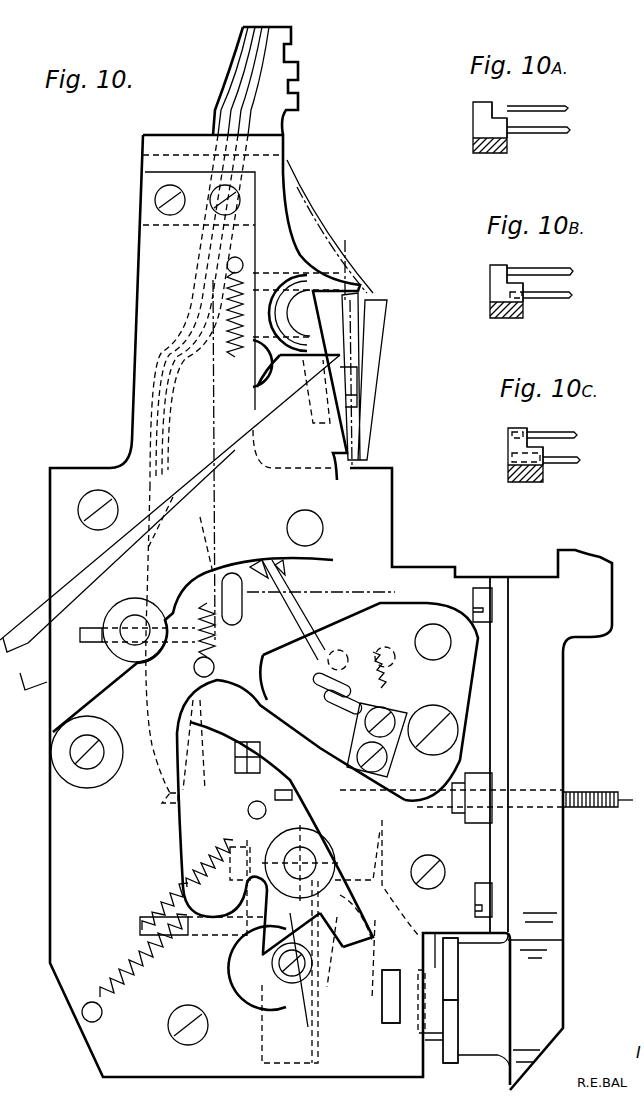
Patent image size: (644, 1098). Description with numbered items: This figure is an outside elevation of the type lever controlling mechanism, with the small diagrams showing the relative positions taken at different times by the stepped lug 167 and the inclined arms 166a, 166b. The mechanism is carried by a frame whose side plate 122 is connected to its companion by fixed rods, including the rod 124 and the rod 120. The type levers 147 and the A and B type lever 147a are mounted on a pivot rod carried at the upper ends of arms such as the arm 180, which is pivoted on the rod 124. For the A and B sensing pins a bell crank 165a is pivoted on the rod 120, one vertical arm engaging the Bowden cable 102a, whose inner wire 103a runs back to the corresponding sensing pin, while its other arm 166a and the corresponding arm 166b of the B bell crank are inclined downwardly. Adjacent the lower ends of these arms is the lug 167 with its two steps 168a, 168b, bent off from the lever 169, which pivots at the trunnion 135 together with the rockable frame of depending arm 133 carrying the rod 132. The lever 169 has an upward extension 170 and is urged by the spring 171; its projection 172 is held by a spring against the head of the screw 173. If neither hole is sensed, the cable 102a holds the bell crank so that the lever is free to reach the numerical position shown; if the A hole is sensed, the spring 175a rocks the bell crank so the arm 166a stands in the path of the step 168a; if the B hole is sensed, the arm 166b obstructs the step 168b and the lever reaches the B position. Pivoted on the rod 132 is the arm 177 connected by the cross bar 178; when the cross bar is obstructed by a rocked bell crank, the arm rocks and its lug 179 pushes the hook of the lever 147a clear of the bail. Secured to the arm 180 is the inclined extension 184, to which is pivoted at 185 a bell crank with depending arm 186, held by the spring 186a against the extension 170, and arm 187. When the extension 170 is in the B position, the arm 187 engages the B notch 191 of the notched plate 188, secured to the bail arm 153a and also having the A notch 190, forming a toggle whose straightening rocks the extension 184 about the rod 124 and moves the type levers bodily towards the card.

In FIG. 10, the Bowden cable 102a is at (588, 792).
In FIG. 10, the pin extension 103a is at (625, 807).
In FIG. 10, the rod 120 is at (433, 873).
In FIG. 10, the side plate 122 is at (75, 842).
In FIG. 10, the rod 124 is at (308, 526).
In FIG. 10, the rod 132 is at (265, 980).
In FIG. 10, the depending arm 133 is at (295, 985).
In FIG. 10, the trunnion 135 is at (187, 887).
In FIG. 10, the type lever 147 is at (270, 55).
In FIG. 10, the A and B type lever 147a is at (263, 112).
In FIG. 10, the arm of the actuating bail 153a is at (357, 657).
In FIG. 10, the bell crank 165a is at (440, 840).
In FIG. 10, the inclined arm 166a is at (365, 948).
In FIG. 10A, the inclined arm 166a is at (553, 132).
In FIG. 10B, the inclined arm 166a is at (565, 298).
In FIG. 10C, the inclined arm 166a is at (578, 462).
In FIG. 10A, the inclined arm 166b is at (550, 108).
In FIG. 10B, the inclined arm 166b is at (567, 270).
In FIG. 10C, the inclined arm 166b is at (575, 436).
In FIG. 10, the stepped lug 167 is at (312, 985).
In FIG. 10A, the stepped lug 167 is at (473, 118).
In FIG. 10B, the stepped lug 167 is at (490, 280).
In FIG. 10C, the stepped lug 167 is at (508, 445).
In FIG. 10, the step 168a is at (345, 925).
In FIG. 10A, the step 168a is at (507, 135).
In FIG. 10B, the step 168a is at (523, 300).
In FIG. 10C, the step 168a is at (543, 465).
In FIG. 10, the step 168b is at (370, 997).
In FIG. 10A, the step 168b is at (495, 103).
In FIG. 10B, the step 168b is at (510, 266).
In FIG. 10C, the step 168b is at (527, 430).
In FIG. 10, the lever 169 is at (372, 930).
In FIG. 10A, the lever 169 is at (473, 148).
In FIG. 10B, the lever 169 is at (490, 312).
In FIG. 10C, the lever 169 is at (508, 478).
In FIG. 10, the upwardly directed extension 170 is at (178, 822).
In FIG. 10, the spring 171 is at (133, 960).
In FIG. 10, the projection 172 is at (257, 943).
In FIG. 10, the screw 173 is at (290, 982).
In FIG. 10, the spring 175a is at (500, 782).
In FIG. 10, the arm 177 is at (178, 850).
In FIG. 10, the cross bar 178 is at (292, 795).
In FIG. 10, the lug 179 is at (160, 793).
In FIG. 10, the arm 180 is at (302, 443).
In FIG. 10, the extension 184 is at (73, 697).
In FIG. 10, the pivot 185 is at (130, 625).
In FIG. 10, the bell crank arm 186 is at (163, 723).
In FIG. 10, the spring 186a is at (233, 360).
In FIG. 10, the bell crank arm 187 is at (305, 648).
In FIG. 10, the notched plate 188 is at (363, 700).
In FIG. 10, the A notch 190 is at (405, 635).
In FIG. 10, the B notch 191 is at (357, 740).